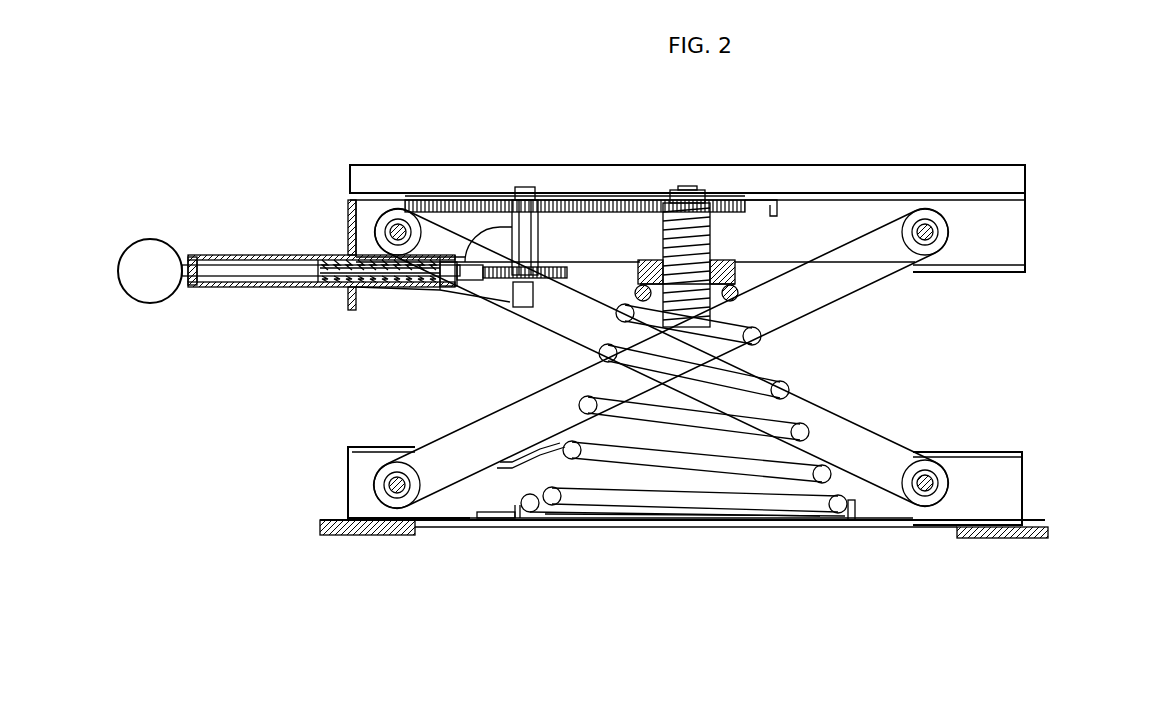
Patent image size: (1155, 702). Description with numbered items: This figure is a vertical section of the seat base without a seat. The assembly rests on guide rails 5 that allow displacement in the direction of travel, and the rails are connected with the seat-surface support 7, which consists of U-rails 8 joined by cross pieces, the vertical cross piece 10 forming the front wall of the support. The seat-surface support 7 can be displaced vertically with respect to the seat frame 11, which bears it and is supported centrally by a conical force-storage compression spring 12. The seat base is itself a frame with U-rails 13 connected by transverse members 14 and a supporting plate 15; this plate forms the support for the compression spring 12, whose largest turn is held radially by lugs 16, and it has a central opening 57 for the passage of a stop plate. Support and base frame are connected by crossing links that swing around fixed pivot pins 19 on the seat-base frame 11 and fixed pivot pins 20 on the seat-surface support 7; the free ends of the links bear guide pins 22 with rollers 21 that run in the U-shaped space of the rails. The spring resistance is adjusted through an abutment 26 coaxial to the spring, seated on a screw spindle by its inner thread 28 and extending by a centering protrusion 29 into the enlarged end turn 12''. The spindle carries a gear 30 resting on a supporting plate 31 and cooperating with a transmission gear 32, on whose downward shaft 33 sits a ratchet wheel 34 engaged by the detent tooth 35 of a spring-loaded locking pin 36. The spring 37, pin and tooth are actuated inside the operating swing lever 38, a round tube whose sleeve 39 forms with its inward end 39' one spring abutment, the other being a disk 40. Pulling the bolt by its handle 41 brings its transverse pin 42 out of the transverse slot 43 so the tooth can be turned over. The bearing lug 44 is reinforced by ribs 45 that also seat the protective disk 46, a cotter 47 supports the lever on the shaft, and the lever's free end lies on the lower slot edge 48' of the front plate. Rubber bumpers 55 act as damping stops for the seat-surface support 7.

The guide rails 5 is at (885, 178).
The seat-surface support 7 is at (1032, 203).
The U-rails 8 is at (978, 215).
The cross piece 10 is at (350, 208).
The seat frame 11 is at (979, 446).
The conical force-storage compression spring 12 is at (661, 415).
The end turn 12'' is at (766, 320).
The U-rails 13 is at (977, 507).
The transverse members 14 is at (342, 530).
The supporting plate 15 is at (800, 527).
The lugs 16 is at (514, 518).
The fixed pivot pins 19 is at (393, 505).
The fixed pivot pins 20 is at (393, 215).
The rollers 21 is at (952, 230).
The guide pins 22 is at (943, 235).
The abutment 26 is at (655, 260).
The inner thread 28 is at (727, 260).
The centering protrusion 29 is at (737, 293).
The gear 30 is at (727, 202).
The supporting plate 31 is at (760, 200).
The transmission gear 32 is at (568, 200).
The shaft 33 is at (522, 190).
The ratchet wheel 34 is at (470, 282).
The detent tooth 35 is at (452, 288).
The locking pin 36 is at (378, 290).
The spring 37 is at (340, 260).
The operating swing lever 38 is at (271, 251).
The sleeve 39 is at (321, 322).
The inward directed end 39' is at (348, 324).
The disk 40 is at (493, 260).
The handle 41 is at (147, 285).
The transverse pin 42 is at (197, 287).
The transverse slot 43 is at (195, 257).
The bearing lug 44 is at (500, 282).
The ribs 45 is at (492, 257).
The protective disk 46 is at (485, 300).
The cotter 47 is at (520, 305).
The lower slot edge 48' is at (370, 320).
The rubber bumpers 55 is at (523, 455).
The central opening 57 is at (662, 527).